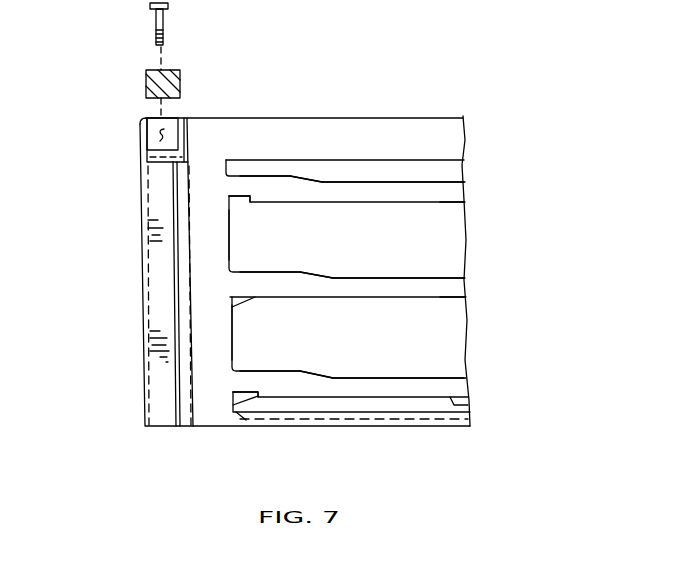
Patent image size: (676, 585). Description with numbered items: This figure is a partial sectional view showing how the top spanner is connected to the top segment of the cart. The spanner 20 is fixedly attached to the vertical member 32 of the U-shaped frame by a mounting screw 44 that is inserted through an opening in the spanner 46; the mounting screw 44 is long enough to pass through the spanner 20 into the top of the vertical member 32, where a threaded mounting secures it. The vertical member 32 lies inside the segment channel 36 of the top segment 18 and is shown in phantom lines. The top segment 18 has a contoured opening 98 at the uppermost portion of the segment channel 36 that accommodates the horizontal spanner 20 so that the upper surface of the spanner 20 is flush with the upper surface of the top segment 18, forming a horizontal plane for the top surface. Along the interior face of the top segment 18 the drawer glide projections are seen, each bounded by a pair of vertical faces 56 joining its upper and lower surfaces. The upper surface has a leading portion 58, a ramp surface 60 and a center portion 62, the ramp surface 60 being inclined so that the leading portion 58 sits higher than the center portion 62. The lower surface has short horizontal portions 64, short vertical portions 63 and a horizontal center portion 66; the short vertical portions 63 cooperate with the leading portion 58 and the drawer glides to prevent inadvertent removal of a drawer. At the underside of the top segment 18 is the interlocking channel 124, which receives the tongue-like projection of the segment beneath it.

The top segment 18 is at (150, 350).
The spanner 20 is at (146, 80).
The vertical member 32 is at (158, 188).
The segment channel 36 is at (165, 272).
The mounting screw 44 is at (154, 31).
The spanner opening 46 is at (151, 70).
The vertical face 56 is at (231, 223).
The leading portion 58 is at (266, 175).
The ramp surface 60 is at (323, 182).
The center portion 62 is at (399, 181).
The short vertical portion 63 is at (232, 307).
The short horizontal portion 64 is at (254, 296).
The horizontal center portion 66 is at (445, 203).
The contoured opening 98 is at (160, 137).
The interlocking channel 124 is at (252, 420).